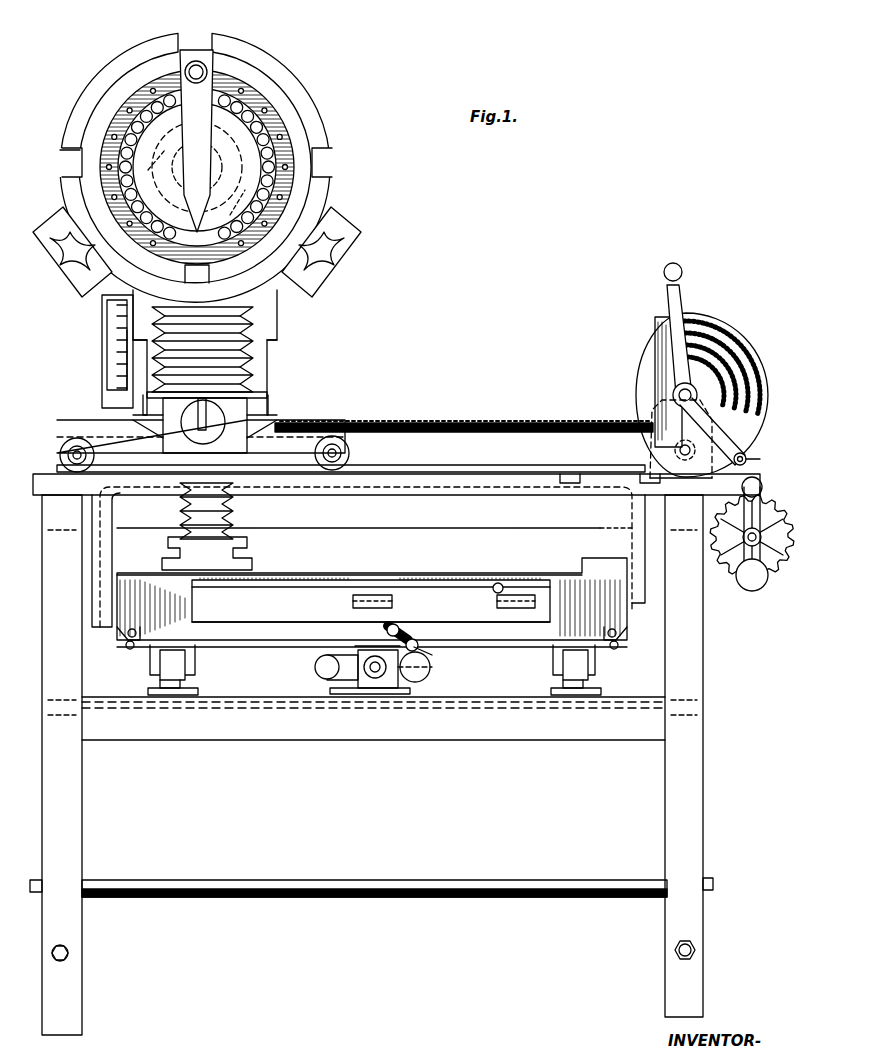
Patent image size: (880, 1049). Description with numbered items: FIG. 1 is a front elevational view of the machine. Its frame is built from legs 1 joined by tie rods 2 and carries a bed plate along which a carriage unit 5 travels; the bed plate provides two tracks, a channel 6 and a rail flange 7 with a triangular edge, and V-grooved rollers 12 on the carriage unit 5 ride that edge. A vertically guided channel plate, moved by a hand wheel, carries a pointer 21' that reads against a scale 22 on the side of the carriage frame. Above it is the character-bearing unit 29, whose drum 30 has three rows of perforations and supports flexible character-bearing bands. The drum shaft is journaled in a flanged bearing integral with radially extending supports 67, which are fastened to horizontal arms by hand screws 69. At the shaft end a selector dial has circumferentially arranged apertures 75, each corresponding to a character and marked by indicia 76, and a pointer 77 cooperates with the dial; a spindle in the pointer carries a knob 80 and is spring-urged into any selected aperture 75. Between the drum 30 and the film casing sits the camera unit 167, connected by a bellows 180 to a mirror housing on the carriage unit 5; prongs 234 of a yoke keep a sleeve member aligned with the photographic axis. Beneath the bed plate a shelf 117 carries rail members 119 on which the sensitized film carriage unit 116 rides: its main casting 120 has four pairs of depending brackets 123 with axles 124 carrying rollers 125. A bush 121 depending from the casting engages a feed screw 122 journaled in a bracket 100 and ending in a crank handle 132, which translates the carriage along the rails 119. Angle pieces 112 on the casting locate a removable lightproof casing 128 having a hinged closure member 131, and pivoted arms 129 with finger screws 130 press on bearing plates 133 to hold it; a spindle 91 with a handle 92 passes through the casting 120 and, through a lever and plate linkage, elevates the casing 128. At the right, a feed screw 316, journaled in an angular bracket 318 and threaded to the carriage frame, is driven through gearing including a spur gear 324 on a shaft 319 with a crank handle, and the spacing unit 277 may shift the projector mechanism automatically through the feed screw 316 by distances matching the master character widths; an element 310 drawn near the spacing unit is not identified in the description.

The legs 1 is at (66, 832).
The tie rods 2 is at (292, 878).
The carriage unit 5 is at (280, 408).
The channel 6 is at (75, 442).
The rail flange 7 is at (440, 471).
The rollers 12 is at (68, 460).
The pointer 21' is at (94, 351).
The scale 22 is at (112, 376).
The character-bearing unit 29 is at (322, 108).
The drum 30 is at (62, 150).
The radially extending supports 67 is at (100, 207).
The hand screws 69 is at (75, 258).
The apertures 75 is at (140, 90).
The indicia 76 is at (272, 172).
The pointer 77 is at (185, 118).
The knob 80 is at (210, 52).
The spindle 91 is at (405, 634).
The handle 92 is at (432, 655).
The bracket 100 is at (385, 695).
The angle pieces 112 is at (104, 552).
The sensitized film carriage unit 116 is at (346, 568).
The shelf 117 is at (162, 710).
The rail members 119 is at (155, 692).
The main casting 120 is at (450, 578).
The bush 121 is at (432, 672).
The feed screw 122 is at (372, 672).
The depending brackets 123 is at (150, 660).
The axles 124 is at (182, 684).
The rollers 125 is at (190, 655).
The removable lightproof casing 128 is at (430, 610).
The arms 129 is at (128, 640).
The finger screws 130 is at (138, 628).
The hinged closure member 131 is at (291, 575).
The crank handle 132 is at (326, 680).
The bearing plates 133 is at (135, 645).
The camera unit 167 is at (256, 376).
The bellows 180 is at (256, 358).
The prongs 234 is at (248, 545).
The spacing unit 277 is at (728, 320).
The sector 310 is at (652, 451).
The feed screw 316 is at (447, 422).
The angular bracket 318 is at (758, 497).
The shaft 319 is at (740, 572).
The second spur gear 324 is at (770, 580).